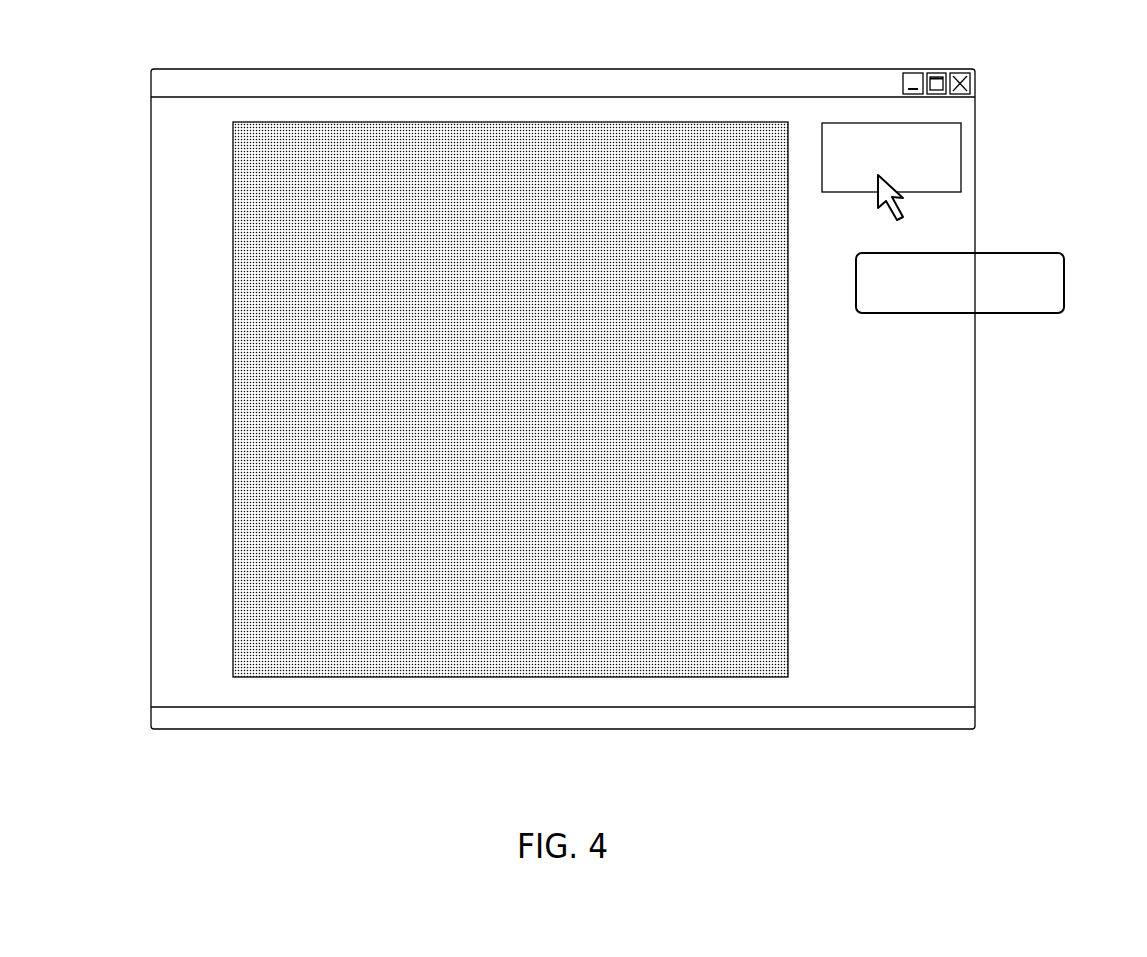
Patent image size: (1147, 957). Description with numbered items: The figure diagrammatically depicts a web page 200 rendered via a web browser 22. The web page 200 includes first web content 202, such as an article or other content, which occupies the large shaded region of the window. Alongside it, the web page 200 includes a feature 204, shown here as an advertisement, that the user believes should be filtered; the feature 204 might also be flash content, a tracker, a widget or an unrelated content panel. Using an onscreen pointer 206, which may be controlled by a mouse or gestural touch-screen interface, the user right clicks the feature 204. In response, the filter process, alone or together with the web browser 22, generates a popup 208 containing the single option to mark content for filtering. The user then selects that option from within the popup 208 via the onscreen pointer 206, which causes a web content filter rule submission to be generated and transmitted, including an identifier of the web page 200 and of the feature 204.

The web browser 22 is at (63, 53).
The web page 200 is at (150, 157).
The first web content 202 is at (510, 399).
The feature 204 is at (961, 157).
The onscreen pointer 206 is at (875, 192).
The popup 208 is at (1064, 280).